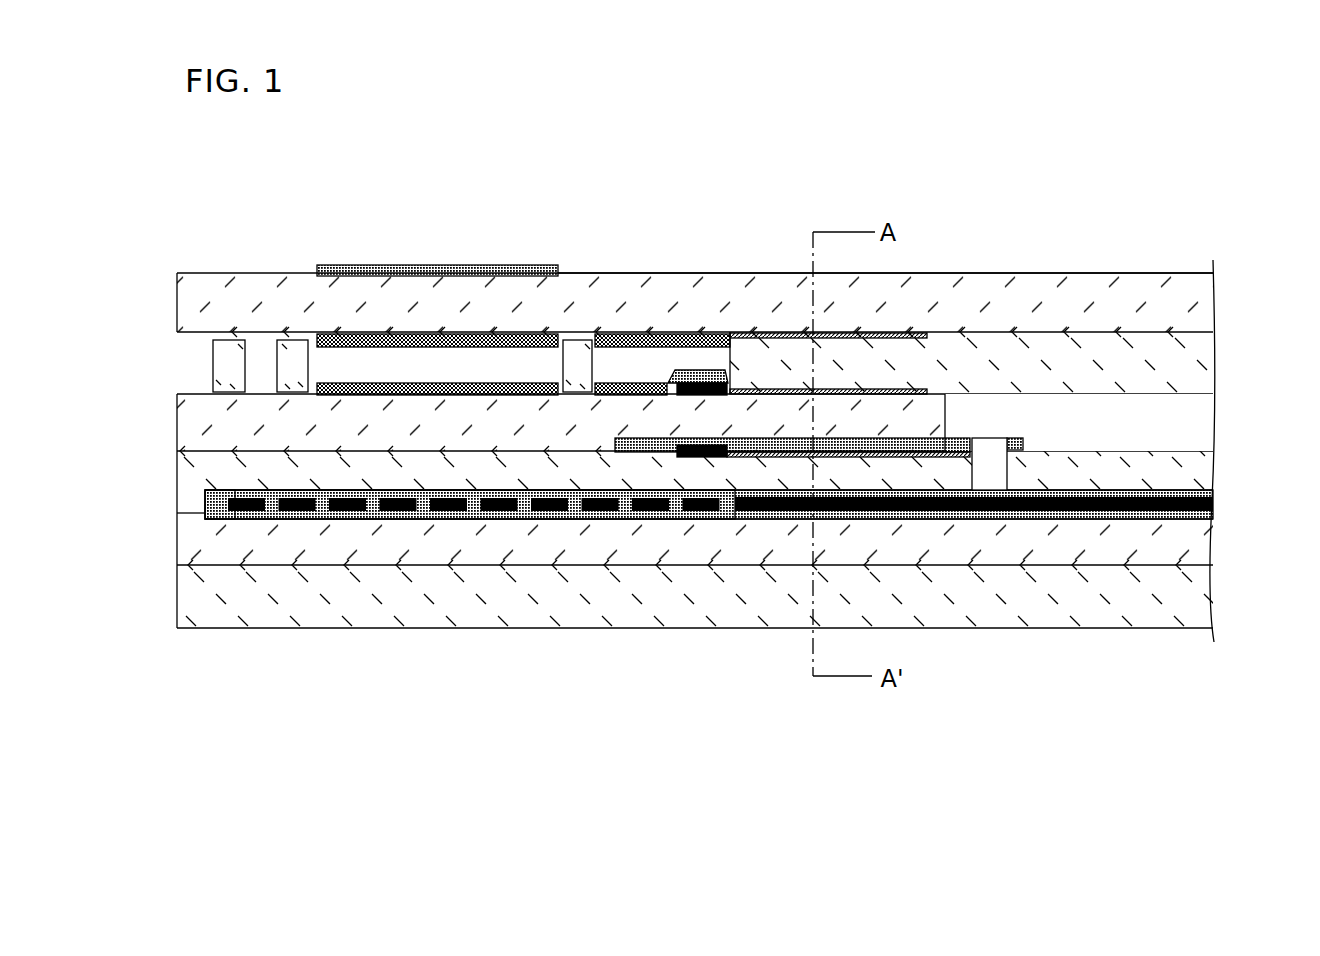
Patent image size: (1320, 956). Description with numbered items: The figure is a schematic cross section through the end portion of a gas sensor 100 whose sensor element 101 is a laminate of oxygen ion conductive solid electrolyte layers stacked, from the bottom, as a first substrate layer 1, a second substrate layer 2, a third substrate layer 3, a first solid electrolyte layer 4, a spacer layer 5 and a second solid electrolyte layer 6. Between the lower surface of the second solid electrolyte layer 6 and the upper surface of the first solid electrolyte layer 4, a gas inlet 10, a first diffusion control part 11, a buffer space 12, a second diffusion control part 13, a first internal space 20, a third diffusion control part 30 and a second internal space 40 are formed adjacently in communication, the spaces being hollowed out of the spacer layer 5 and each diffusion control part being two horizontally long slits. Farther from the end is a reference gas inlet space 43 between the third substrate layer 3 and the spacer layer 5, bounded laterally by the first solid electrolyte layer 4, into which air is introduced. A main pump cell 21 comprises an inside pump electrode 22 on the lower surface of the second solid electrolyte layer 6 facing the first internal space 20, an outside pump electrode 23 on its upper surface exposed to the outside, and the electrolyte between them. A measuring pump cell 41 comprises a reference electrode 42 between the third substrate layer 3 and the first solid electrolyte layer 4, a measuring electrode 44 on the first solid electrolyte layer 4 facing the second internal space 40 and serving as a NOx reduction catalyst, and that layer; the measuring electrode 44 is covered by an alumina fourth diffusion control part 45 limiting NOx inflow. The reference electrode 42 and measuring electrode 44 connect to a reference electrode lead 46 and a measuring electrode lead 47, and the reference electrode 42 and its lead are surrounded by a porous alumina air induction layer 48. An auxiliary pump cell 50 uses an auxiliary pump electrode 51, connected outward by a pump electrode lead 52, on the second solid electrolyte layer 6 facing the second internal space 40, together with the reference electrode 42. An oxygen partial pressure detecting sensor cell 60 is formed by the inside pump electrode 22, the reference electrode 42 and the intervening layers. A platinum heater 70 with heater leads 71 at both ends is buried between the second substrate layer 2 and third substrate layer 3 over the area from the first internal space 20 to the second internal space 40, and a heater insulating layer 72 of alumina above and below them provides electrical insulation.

The gas sensor 100 is at (231, 179).
The sensor element 101 is at (1098, 272).
The first substrate layer 1 is at (1212, 595).
The second substrate layer 2 is at (1212, 541).
The third substrate layer 3 is at (1212, 466).
The first solid electrolyte layer 4 is at (185, 423).
The spacer layer 5 is at (1212, 362).
The second solid electrolyte layer 6 is at (1212, 312).
The gas inlet 10 is at (188, 372).
The first diffusion control part 11 is at (222, 340).
The buffer space 12 is at (262, 353).
The second diffusion control part 13 is at (305, 345).
The first internal space 20 is at (385, 387).
The main pump cell 21 is at (498, 305).
The inside pump electrode 22 is at (461, 342).
The outside pump electrode 23 is at (430, 270).
The third diffusion control part 30 is at (582, 346).
The second internal space 40 is at (608, 358).
The measuring pump cell 41 is at (706, 420).
The reference electrode 42 is at (690, 459).
The reference gas inlet space 43 is at (1210, 427).
The measuring electrode 44 is at (686, 396).
The fourth diffusion control part 45 is at (675, 374).
The reference electrode lead 46 is at (877, 457).
The measuring electrode lead 47 is at (920, 395).
The air induction layer 48 is at (960, 438).
The auxiliary pump cell 50 is at (637, 306).
The auxiliary pump electrode 51 is at (678, 337).
The pump electrode lead 52 is at (760, 335).
The oxygen partial pressure detecting sensor cell 60 is at (477, 430).
The heater 70 is at (255, 508).
The heater leads 71 is at (1213, 503).
The heater insulating layer 72 is at (220, 508).